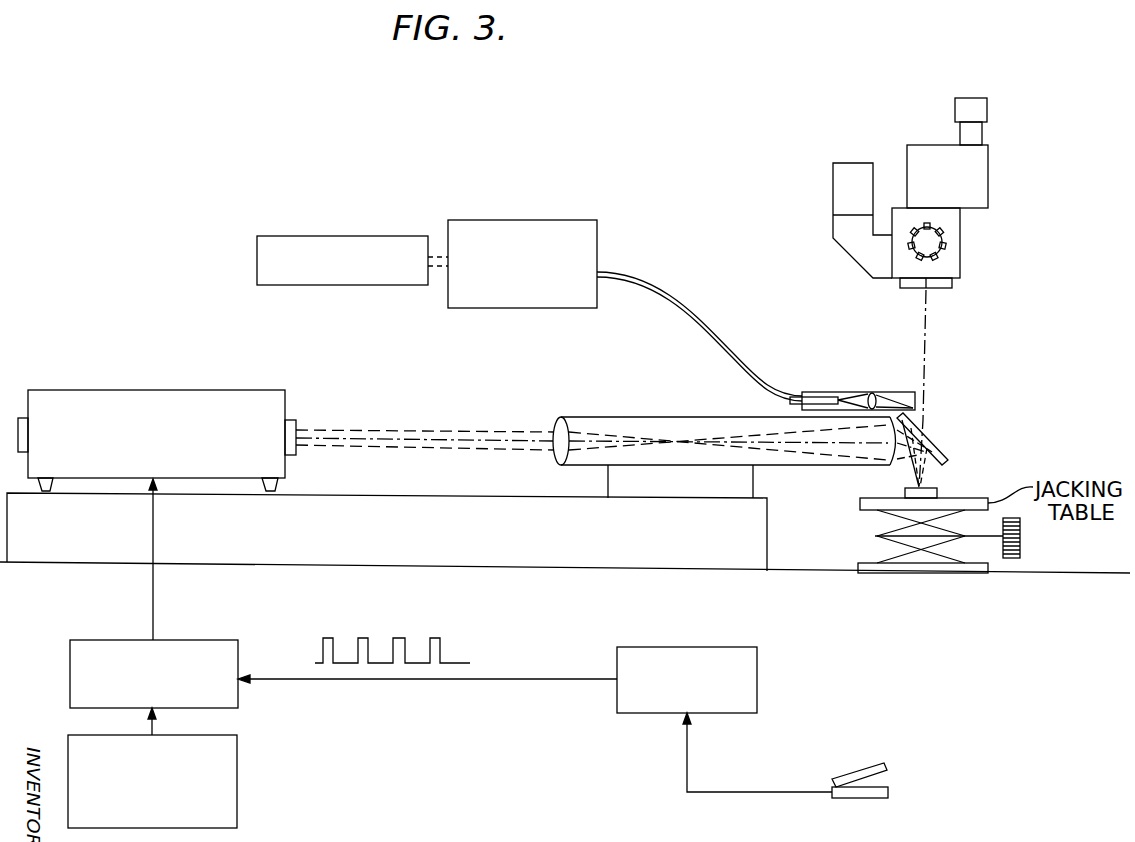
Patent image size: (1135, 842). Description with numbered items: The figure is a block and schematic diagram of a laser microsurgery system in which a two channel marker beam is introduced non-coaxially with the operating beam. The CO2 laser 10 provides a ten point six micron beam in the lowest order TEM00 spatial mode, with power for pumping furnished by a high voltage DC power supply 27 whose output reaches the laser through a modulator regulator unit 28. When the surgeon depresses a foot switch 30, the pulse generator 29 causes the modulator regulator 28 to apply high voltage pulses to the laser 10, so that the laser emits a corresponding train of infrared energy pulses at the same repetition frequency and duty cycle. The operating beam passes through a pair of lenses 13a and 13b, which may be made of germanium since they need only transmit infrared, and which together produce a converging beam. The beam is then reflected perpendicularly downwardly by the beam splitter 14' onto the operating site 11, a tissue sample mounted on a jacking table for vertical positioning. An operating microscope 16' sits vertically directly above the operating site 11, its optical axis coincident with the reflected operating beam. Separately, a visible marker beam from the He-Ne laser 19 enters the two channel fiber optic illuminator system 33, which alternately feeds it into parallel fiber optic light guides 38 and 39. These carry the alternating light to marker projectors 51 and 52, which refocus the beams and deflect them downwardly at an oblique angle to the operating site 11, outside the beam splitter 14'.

The CO2 laser 10 is at (156, 400).
The operating site 11 is at (935, 489).
The lens 13a is at (558, 428).
The lens 13b is at (890, 460).
The beam splitter 14' is at (934, 437).
The operating microscope 16' is at (929, 193).
The He-Ne laser 19 is at (273, 240).
The high voltage DC power supply 27 is at (237, 790).
The modulator regulator unit 28 is at (72, 682).
The pulse generator 29 is at (757, 675).
The foot switch 30 is at (936, 779).
The two channel fiber optic illuminator system 33 is at (597, 252).
The fiber optic light guide 38 is at (699, 336).
The fiber optic light guide 39 is at (687, 318).
The marker projector 51 is at (852, 376).
The marker projector 52 is at (840, 392).